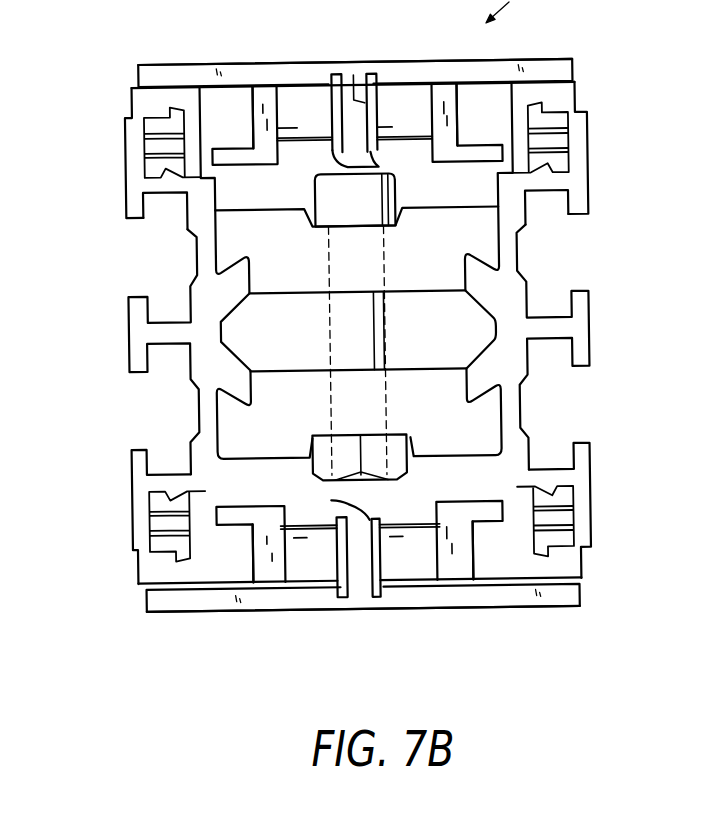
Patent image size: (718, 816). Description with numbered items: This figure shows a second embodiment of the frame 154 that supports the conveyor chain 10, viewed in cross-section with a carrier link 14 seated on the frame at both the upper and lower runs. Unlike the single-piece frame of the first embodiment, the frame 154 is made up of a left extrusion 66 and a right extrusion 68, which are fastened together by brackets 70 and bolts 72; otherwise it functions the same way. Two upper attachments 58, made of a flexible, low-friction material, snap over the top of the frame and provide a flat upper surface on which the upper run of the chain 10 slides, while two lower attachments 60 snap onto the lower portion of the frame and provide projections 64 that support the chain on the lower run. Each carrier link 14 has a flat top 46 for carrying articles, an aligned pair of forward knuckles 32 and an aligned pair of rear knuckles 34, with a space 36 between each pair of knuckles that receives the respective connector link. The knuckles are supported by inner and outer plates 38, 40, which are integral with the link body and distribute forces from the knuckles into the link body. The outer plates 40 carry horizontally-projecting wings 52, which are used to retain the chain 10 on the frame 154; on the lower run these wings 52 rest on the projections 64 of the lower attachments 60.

The chain 10 is at (384, 341).
The carrier link 14 is at (577, 57).
The forward knuckles 32 is at (407, 556).
The rear knuckles 34 is at (302, 98).
The space 36 is at (358, 92).
The inner plate 38 is at (381, 165).
The outer plate 40 is at (264, 96).
The top 46 is at (532, 60).
The wings 52 is at (220, 147).
The upper attachments 58 is at (580, 90).
The lower attachments 60 is at (580, 562).
The projections 64 is at (548, 583).
The left extrusion 66 is at (125, 187).
The right extrusion 68 is at (582, 163).
The brackets 70 is at (472, 196).
The bolts 72 is at (313, 192).
The frame 154 is at (384, 338).